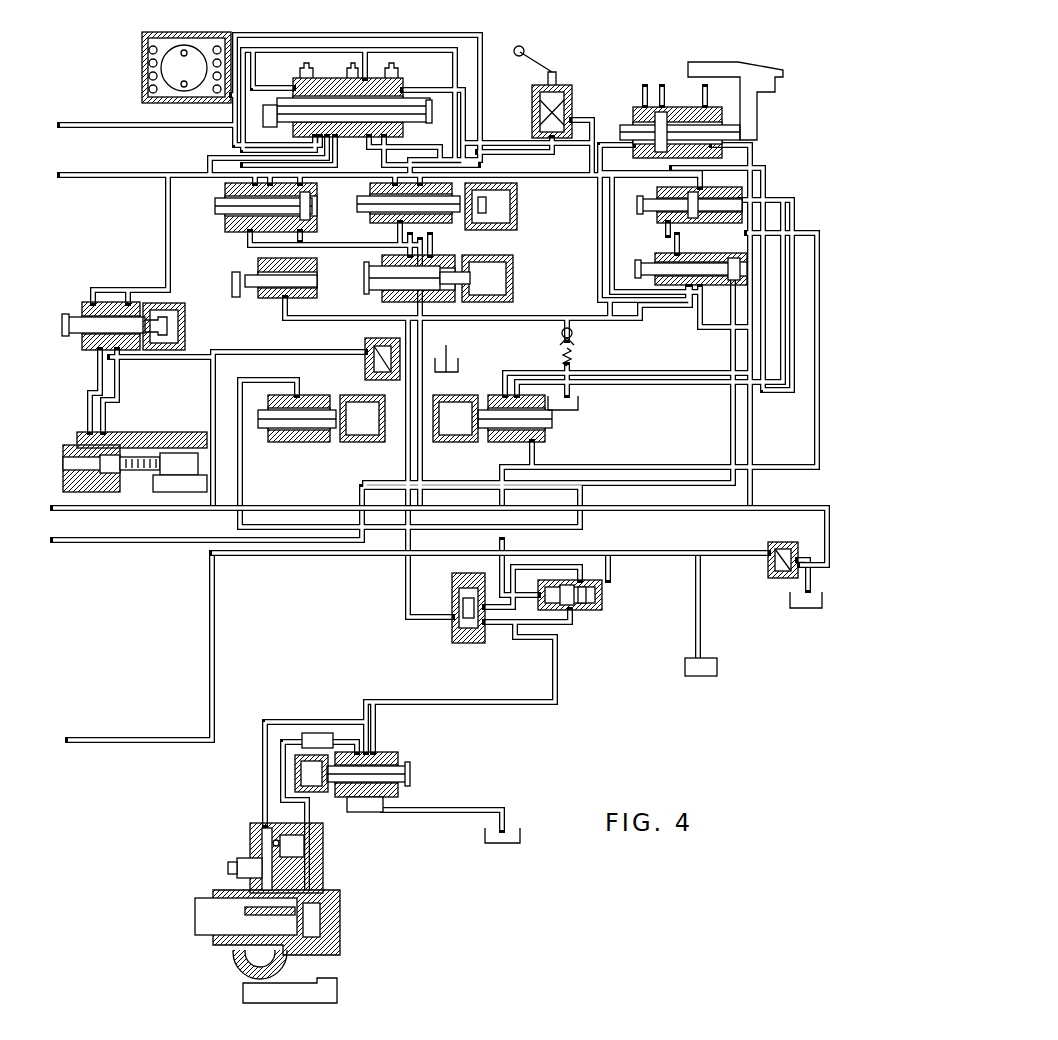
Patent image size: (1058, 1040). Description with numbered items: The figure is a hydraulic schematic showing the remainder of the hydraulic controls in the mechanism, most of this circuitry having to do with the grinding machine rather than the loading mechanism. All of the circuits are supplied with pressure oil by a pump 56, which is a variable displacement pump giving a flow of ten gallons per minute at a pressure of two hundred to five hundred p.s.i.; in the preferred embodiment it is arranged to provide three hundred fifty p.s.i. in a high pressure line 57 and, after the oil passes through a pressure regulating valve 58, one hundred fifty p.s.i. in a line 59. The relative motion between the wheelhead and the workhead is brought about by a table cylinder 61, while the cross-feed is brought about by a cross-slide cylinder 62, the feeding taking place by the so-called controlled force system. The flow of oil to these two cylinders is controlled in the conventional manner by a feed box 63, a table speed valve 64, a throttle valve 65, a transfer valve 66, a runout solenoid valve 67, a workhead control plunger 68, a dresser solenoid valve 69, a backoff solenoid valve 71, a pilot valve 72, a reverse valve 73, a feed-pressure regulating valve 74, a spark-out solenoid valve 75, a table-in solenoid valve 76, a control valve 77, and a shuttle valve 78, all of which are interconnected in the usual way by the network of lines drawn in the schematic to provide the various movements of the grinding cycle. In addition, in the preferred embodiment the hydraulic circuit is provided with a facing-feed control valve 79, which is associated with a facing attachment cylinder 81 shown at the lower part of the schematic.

The pump 56 is at (717, 666).
The high pressure line 57 is at (666, 556).
The pressure regulating valve 58 is at (770, 575).
The line 59 is at (718, 512).
The table cylinder 61 is at (661, 107).
The cross-slide cylinder 62 is at (128, 436).
The feed box 63 is at (142, 66).
The table speed valve 64 is at (405, 82).
The throttle valve 65 is at (572, 98).
The transfer valve 66 is at (310, 200).
The runout solenoid valve 67 is at (358, 205).
The workhead control plunger 68 is at (272, 298).
The dresser solenoid valve 69 is at (378, 282).
The backoff solenoid valve 71 is at (84, 315).
The pilot valve 72 is at (657, 196).
The reverse valve 73 is at (655, 266).
The feed-pressure regulating valve 74 is at (365, 370).
The spark-out solenoid valve 75 is at (298, 444).
The table-in solenoid valve 76 is at (498, 444).
The control valve 77 is at (456, 628).
The shuttle valve 78 is at (585, 612).
The facing-feed control valve 79 is at (398, 756).
The facing attachment cylinder 81 is at (314, 914).